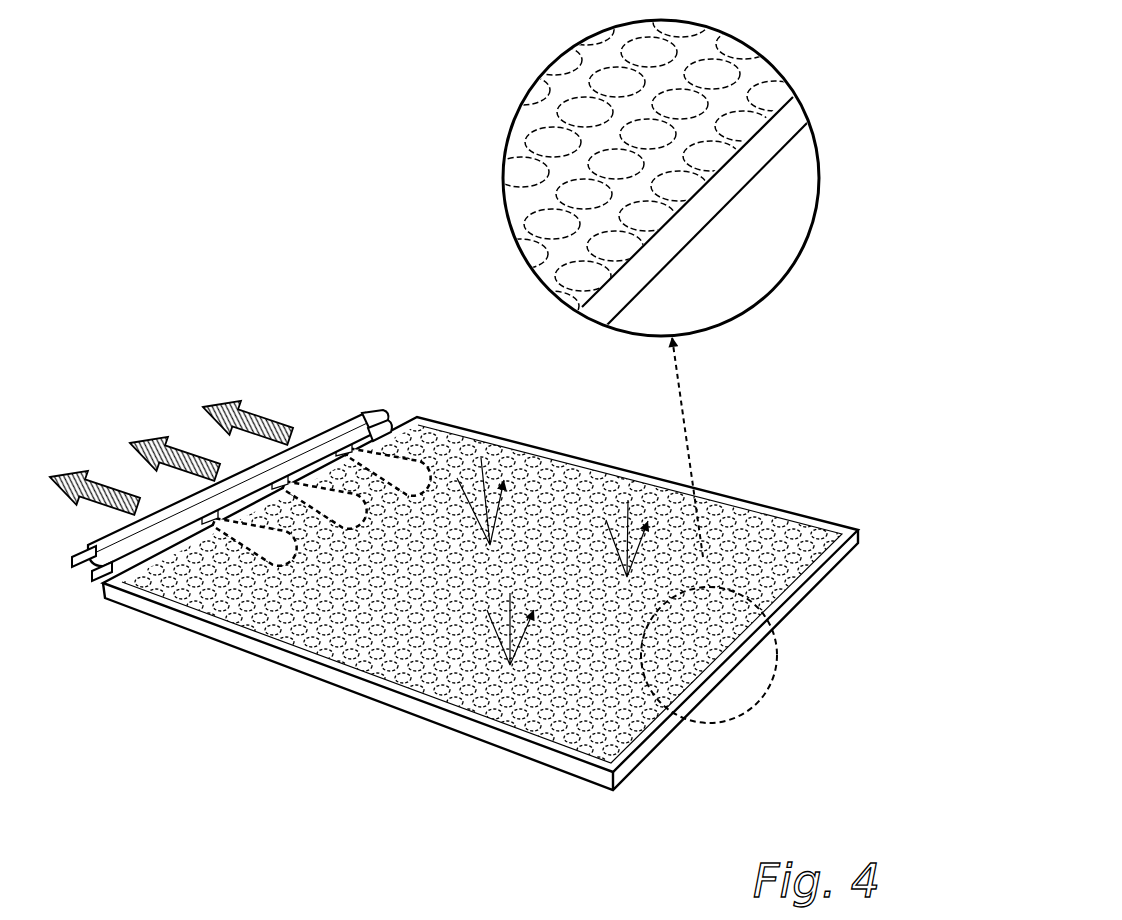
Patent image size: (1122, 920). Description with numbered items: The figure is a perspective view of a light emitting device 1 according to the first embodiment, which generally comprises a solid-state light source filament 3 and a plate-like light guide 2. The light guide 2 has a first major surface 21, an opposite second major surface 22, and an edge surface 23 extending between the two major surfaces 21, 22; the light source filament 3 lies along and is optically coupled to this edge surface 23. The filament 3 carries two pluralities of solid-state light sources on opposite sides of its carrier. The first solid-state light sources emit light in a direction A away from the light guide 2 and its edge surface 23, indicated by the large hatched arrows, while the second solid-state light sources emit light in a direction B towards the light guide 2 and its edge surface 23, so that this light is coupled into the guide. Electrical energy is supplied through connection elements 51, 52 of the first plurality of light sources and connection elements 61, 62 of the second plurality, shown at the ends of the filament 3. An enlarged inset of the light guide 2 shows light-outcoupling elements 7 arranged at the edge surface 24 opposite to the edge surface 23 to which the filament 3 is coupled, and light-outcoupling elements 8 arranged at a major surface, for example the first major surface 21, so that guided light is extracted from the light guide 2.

The light emitting device 1 is at (497, 496).
The light guide 2 is at (527, 496).
The solid-state light source filament 3 is at (241, 506).
The light-outcoupling elements 7 is at (657, 242).
The light-outcoupling elements 8 is at (577, 112).
The first major surface 21 is at (582, 495).
The second major surface 22 is at (552, 773).
The edge surface 23 is at (390, 443).
The edge surface 24 is at (837, 570).
The connection element 51 is at (105, 590).
The connection element 52 is at (376, 430).
The connection element 61 is at (80, 565).
The connection element 62 is at (362, 412).
The direction A is at (187, 447).
The direction B is at (257, 557).